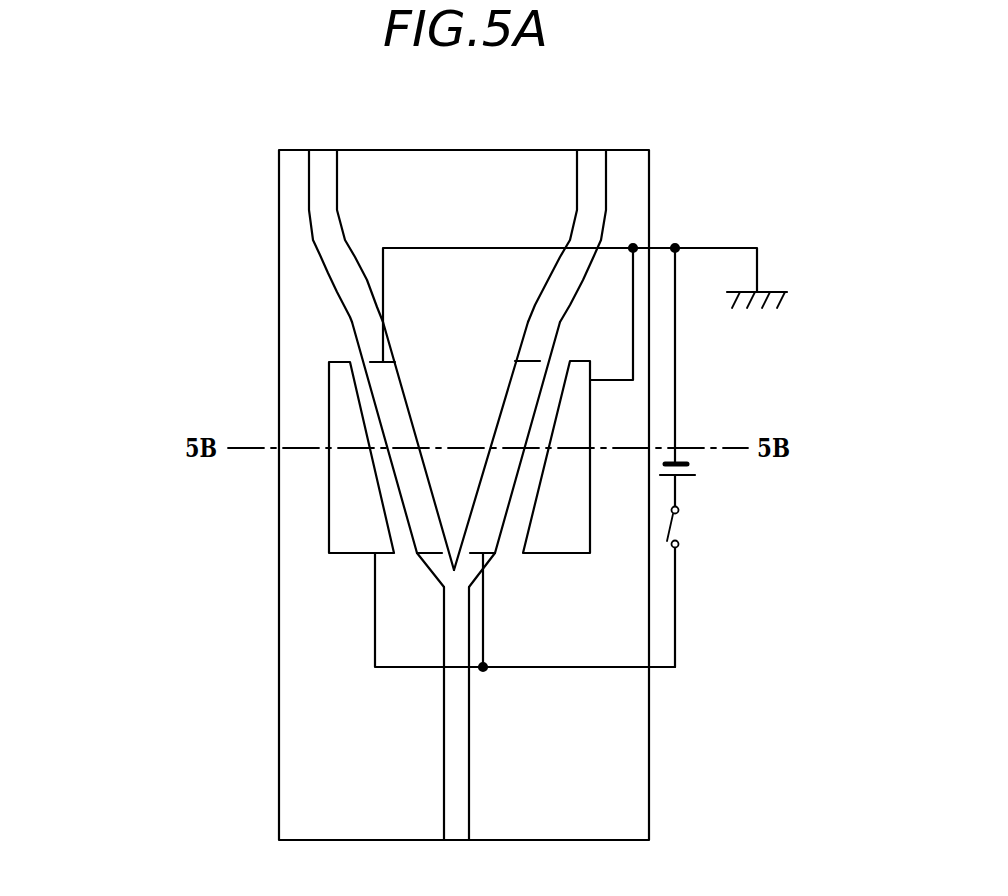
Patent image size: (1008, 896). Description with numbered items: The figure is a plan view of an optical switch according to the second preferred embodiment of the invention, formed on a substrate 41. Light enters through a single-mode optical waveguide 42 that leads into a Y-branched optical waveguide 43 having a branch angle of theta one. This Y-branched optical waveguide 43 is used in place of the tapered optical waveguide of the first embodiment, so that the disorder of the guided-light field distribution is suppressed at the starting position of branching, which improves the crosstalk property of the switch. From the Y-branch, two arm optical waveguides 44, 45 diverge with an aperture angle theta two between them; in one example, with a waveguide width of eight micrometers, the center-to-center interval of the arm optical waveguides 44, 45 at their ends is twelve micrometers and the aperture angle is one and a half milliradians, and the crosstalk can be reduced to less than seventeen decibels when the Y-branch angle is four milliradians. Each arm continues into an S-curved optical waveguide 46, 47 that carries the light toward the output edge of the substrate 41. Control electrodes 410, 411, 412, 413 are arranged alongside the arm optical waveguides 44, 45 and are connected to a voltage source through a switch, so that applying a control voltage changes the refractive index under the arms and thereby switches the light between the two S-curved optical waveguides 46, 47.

The substrate 41 is at (280, 243).
The single-mode optical waveguide 42 is at (441, 781).
The Y-branched optical waveguide 43 is at (452, 587).
The arm optical waveguide 44 is at (505, 520).
The arm optical waveguide 45 is at (405, 510).
The S-curved optical waveguide 46 is at (592, 272).
The S-curved optical waveguide 47 is at (318, 256).
The control electrode 410 is at (510, 480).
The control electrode 411 is at (398, 432).
The control electrode 412 is at (577, 473).
The control electrode 413 is at (331, 387).